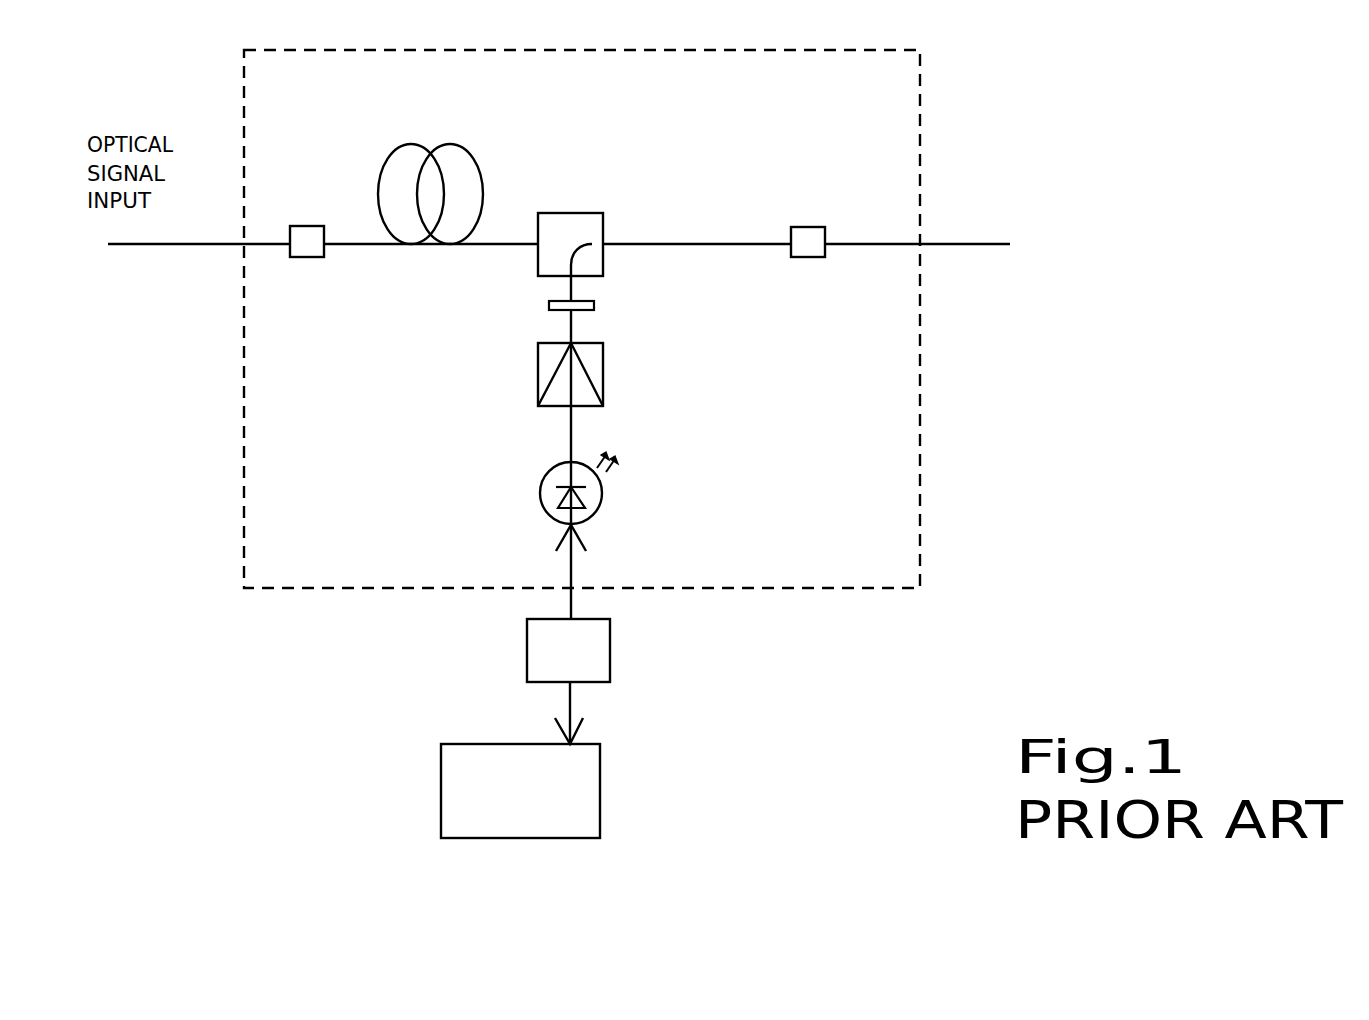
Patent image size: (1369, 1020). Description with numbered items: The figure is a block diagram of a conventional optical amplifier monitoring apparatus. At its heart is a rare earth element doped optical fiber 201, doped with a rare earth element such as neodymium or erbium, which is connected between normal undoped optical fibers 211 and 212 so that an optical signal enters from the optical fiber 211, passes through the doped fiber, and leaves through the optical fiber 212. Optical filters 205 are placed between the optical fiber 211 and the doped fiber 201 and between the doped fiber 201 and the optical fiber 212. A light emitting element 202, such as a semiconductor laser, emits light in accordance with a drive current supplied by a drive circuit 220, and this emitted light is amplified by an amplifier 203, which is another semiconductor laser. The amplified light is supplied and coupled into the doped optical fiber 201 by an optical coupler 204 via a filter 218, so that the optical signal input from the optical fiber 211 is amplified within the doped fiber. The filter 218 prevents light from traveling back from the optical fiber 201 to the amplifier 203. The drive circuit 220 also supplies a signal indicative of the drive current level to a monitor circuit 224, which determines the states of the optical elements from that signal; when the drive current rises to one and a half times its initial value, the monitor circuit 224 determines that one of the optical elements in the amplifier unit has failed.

The rare earth element doped optical fiber 201 is at (418, 143).
The light emitting element 202 is at (592, 515).
The amplifier 203 is at (604, 372).
The optical coupler 204 is at (575, 213).
The optical filters 205 is at (306, 258).
The optical fiber 211 is at (158, 245).
The optical fiber 212 is at (952, 244).
The filter 218 is at (596, 304).
The drive circuit 220 is at (611, 670).
The monitor circuit 224 is at (440, 796).